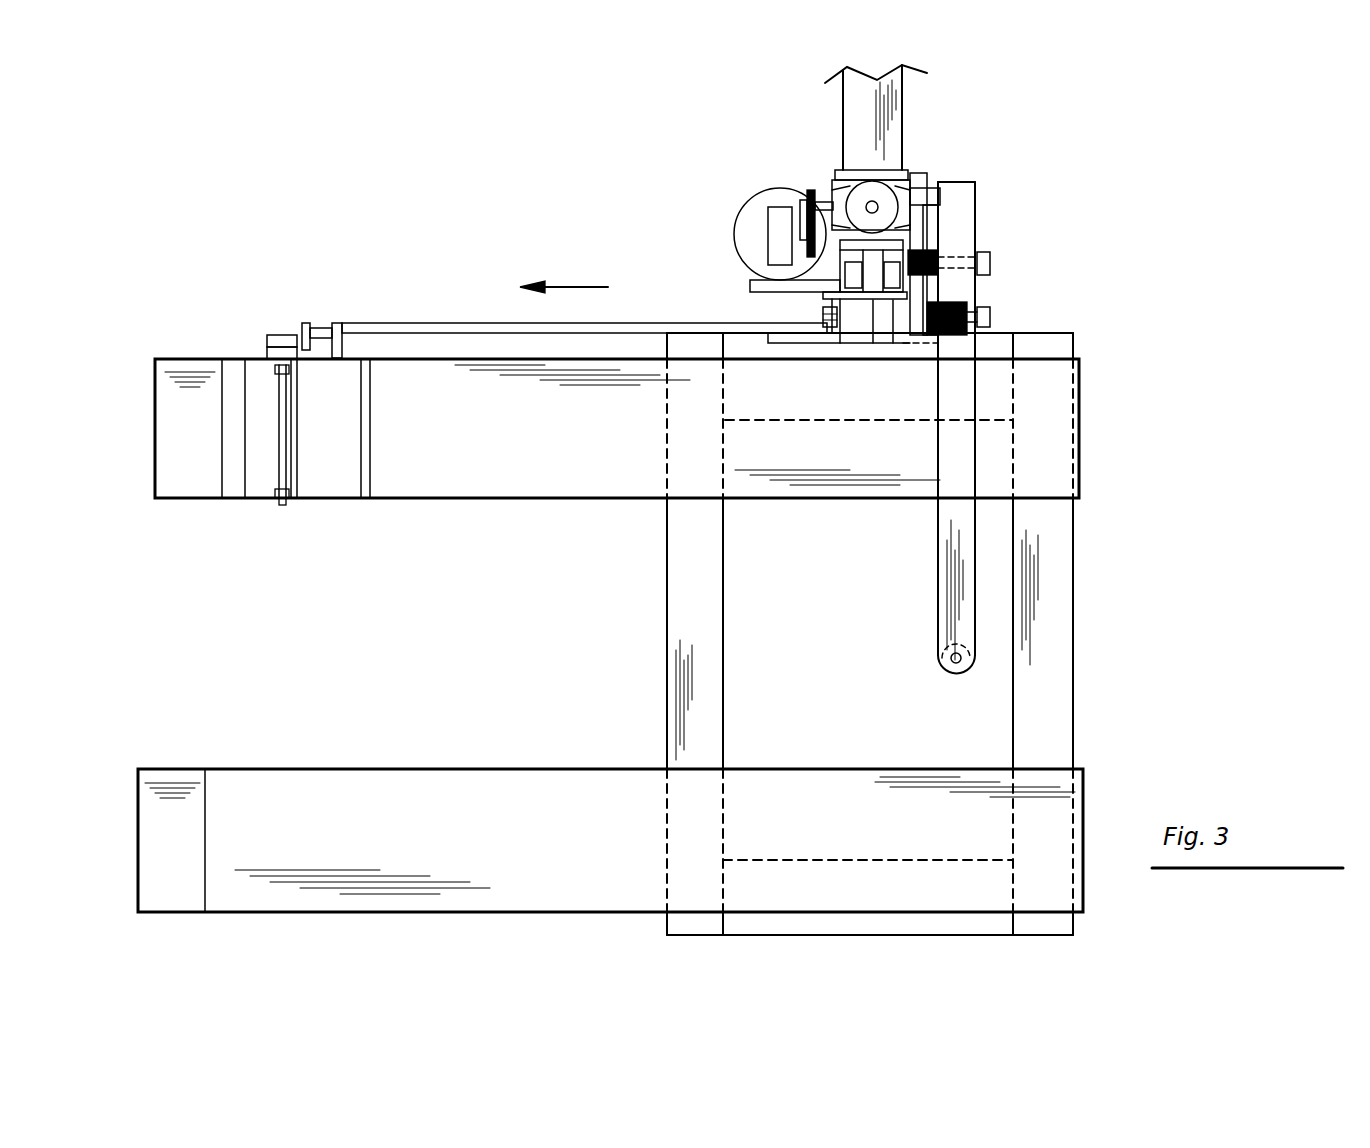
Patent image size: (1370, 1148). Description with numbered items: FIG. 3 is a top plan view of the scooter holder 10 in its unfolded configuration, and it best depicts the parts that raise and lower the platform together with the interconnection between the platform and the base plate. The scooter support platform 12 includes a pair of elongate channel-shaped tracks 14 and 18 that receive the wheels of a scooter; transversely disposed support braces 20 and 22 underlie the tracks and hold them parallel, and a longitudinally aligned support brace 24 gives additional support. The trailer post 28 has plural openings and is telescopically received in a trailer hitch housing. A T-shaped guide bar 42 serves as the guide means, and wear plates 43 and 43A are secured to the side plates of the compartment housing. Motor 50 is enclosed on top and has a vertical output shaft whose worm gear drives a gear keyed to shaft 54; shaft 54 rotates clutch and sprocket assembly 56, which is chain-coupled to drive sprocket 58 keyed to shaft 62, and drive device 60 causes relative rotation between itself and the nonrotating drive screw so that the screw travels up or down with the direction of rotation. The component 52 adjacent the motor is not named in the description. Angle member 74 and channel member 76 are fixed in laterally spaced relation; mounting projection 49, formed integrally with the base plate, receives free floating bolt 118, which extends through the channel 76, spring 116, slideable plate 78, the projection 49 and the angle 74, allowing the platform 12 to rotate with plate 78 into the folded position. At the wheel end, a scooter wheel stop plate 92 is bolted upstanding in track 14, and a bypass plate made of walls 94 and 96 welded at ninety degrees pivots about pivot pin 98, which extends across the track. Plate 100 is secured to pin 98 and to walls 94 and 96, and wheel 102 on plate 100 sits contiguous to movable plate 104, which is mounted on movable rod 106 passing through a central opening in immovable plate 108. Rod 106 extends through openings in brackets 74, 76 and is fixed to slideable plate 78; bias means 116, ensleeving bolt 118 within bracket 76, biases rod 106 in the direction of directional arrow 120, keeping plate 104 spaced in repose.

The scooter holder 10 is at (352, 210).
The scooter support platform 12 is at (1082, 475).
The channel-shaped track 14 is at (562, 440).
The channel-shaped track 18 is at (555, 872).
The support brace 20 is at (1058, 600).
The support brace 22 is at (668, 538).
The support brace 24 is at (753, 920).
The trailer post 28 is at (898, 115).
The T-shaped guide bar 42 is at (918, 247).
The wear plate 43 is at (890, 240).
The wear plate 43A is at (847, 278).
The mounting projection 49 is at (870, 345).
The motor 50 is at (747, 207).
The motor housing 52 is at (773, 235).
The shaft 54 is at (808, 193).
The clutch and sprocket assembly 56 is at (805, 247).
The drive sprocket 58 is at (815, 200).
The drive device 60 is at (882, 183).
The shaft 62 is at (827, 204).
The angle member 74 is at (805, 345).
The channel member 76 is at (893, 337).
The slideable plate 78 is at (920, 173).
The scooter wheel stop plate 92 is at (372, 433).
The plate 94 is at (298, 433).
The plate 96 is at (250, 443).
The pivot pin 98 is at (277, 407).
The plate 100 is at (270, 350).
The wheel 102 is at (282, 333).
The movable plate 104 is at (303, 322).
The movable rod 106 is at (460, 323).
The immovable plate 108 is at (340, 325).
The bias means 116 is at (930, 300).
The free floating bolt 118 is at (992, 310).
The directional arrow 120 is at (576, 287).